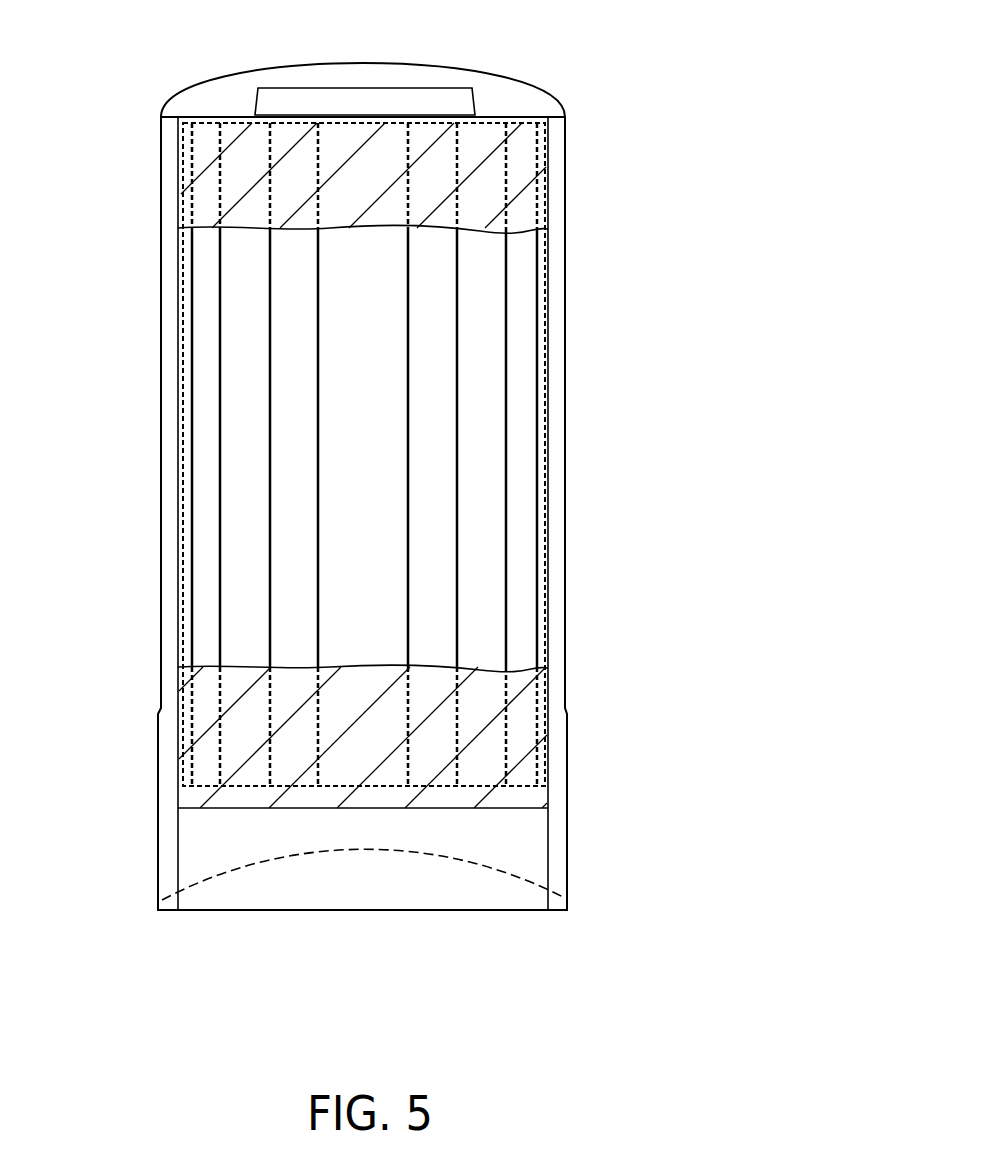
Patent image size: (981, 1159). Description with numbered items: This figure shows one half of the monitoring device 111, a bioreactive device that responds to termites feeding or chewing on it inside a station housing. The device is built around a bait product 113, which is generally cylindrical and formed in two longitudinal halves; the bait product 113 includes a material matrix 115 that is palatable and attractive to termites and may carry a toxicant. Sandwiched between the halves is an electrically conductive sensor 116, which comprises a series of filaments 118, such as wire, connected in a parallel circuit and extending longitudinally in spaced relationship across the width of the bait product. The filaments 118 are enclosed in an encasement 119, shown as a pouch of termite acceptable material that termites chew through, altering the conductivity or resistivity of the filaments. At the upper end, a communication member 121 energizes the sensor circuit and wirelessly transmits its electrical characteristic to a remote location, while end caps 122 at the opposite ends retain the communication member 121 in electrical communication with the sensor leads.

The monitoring device 111 is at (568, 75).
The bait product 113 is at (161, 340).
The material matrix 115 is at (560, 391).
The electrically conductive sensor 116 is at (518, 278).
The filaments 118 is at (270, 397).
The encasement 119 is at (438, 728).
The communication member 121 is at (350, 101).
The end caps 122 is at (158, 818).